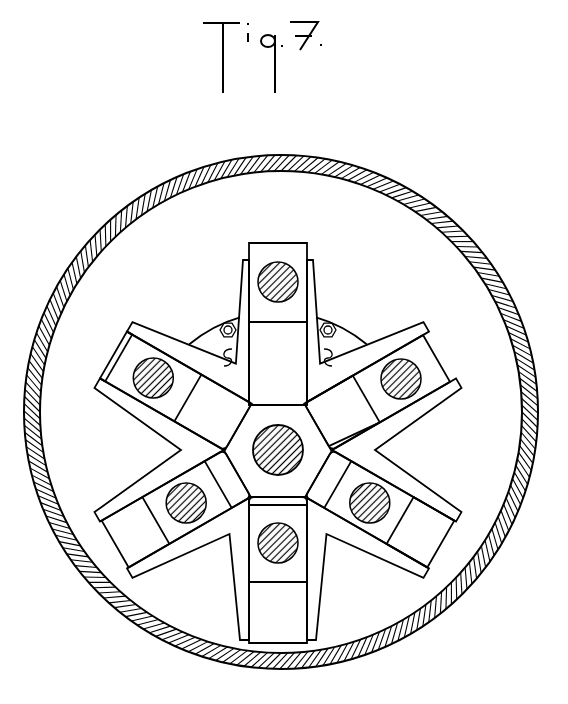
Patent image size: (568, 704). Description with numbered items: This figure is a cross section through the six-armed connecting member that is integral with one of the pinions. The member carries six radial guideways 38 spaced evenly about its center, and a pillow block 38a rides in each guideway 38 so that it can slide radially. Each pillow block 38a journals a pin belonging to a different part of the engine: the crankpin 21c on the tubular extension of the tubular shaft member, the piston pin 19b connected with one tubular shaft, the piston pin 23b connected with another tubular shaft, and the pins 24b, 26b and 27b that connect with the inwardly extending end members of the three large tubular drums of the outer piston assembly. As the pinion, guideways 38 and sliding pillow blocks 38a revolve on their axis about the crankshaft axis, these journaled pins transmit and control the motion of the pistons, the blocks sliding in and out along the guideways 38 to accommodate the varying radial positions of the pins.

The pin 27b is at (277, 268).
The piston pin 23b is at (152, 358).
The piston pin 19b is at (412, 368).
The pin 24b is at (375, 490).
The pin 26b is at (187, 523).
The crankpin 21c is at (292, 556).
The radial guideway 38 is at (251, 362).
The pillow block 38a is at (130, 366).